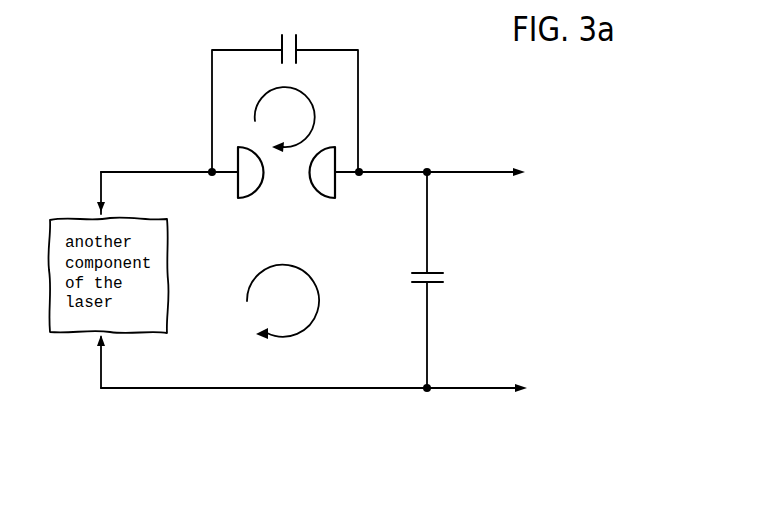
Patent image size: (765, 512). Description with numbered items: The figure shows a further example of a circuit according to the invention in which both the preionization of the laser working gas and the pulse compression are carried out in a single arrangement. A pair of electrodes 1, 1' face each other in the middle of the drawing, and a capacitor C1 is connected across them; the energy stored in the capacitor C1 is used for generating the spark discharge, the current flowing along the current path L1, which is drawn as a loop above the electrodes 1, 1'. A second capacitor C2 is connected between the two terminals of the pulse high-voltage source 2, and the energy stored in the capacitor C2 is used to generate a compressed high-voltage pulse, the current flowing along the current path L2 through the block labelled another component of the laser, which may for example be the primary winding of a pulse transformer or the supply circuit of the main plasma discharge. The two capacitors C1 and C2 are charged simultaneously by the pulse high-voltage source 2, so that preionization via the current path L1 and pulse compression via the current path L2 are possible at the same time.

The first electrode (half-disc) 1 is at (257, 201).
The second electrode (half-disc) 1' is at (322, 201).
The pulse high-voltage source 2 is at (529, 282).
The capacitive energy storage means C1 is at (287, 33).
The capacitive energy storage means C2 is at (442, 280).
The current path L1 is at (285, 119).
The current path L2 is at (283, 302).